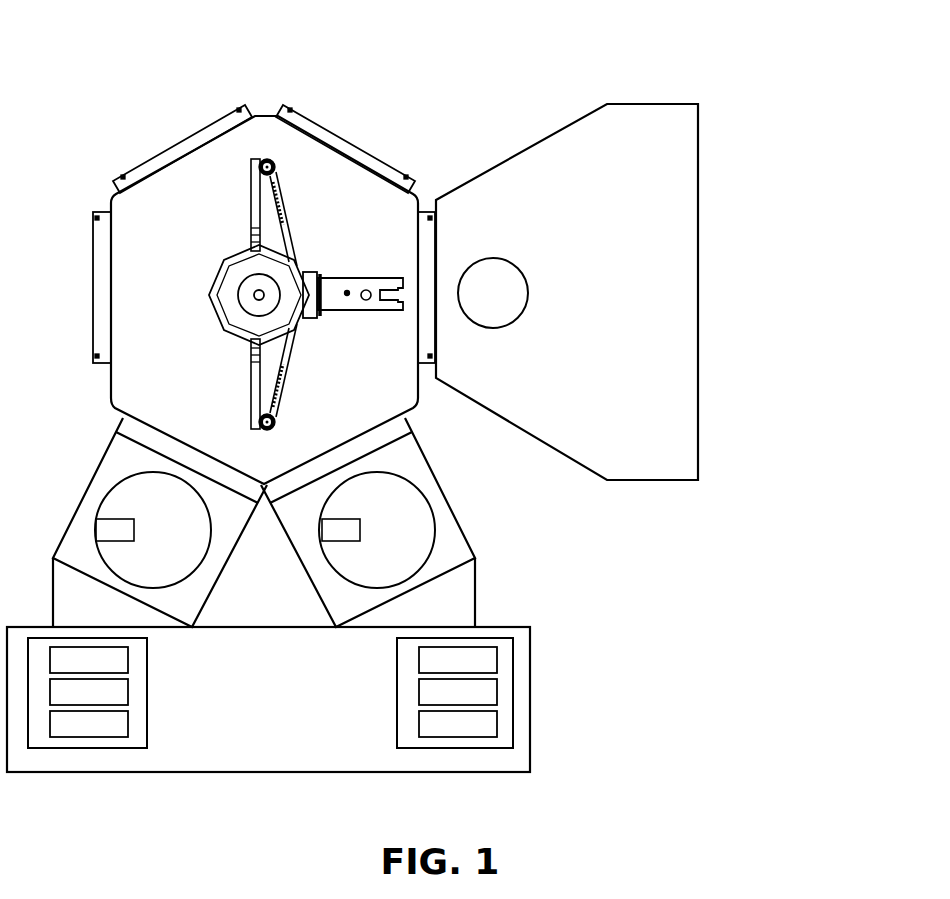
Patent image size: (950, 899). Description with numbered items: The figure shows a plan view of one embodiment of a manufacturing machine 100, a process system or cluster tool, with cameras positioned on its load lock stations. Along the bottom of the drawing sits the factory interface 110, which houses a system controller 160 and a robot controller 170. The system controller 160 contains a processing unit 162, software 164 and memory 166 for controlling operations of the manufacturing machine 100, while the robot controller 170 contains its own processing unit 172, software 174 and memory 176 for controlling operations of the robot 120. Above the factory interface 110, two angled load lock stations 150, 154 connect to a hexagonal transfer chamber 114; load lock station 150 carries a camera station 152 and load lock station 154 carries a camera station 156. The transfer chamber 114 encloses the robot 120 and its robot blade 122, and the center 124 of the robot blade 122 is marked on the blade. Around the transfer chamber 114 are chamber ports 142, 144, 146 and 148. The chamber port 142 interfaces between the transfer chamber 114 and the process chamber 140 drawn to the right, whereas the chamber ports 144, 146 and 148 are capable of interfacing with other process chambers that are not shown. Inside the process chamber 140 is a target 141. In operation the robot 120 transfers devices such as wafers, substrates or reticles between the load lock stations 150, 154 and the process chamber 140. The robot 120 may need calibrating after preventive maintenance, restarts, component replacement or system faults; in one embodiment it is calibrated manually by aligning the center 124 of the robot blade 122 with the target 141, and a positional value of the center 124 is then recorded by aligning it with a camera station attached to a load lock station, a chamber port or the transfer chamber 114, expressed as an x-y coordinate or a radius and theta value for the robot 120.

The manufacturing machine 100 is at (712, 55).
The factory interface 110 is at (253, 733).
The transfer chamber 114 is at (157, 391).
The robot 120 is at (294, 254).
The robot blade 122 is at (404, 196).
The center of the robot blade 124 is at (347, 296).
The process chamber 140 is at (583, 335).
The target 141 is at (478, 303).
The chamber port 142 is at (431, 367).
The chamber port 144 is at (281, 103).
The chamber port 146 is at (250, 103).
The chamber port 148 is at (93, 366).
The load lock station 150 is at (145, 567).
The camera station 152 is at (101, 539).
The load lock station 154 is at (375, 567).
The camera station 156 is at (327, 539).
The system controller 160 is at (396, 667).
The processing unit 162 is at (442, 670).
The software 164 is at (442, 702).
The memory 166 is at (442, 734).
The robot controller 170 is at (148, 668).
The processing unit 172 is at (73, 670).
The software 174 is at (73, 702).
The memory 176 is at (73, 734).